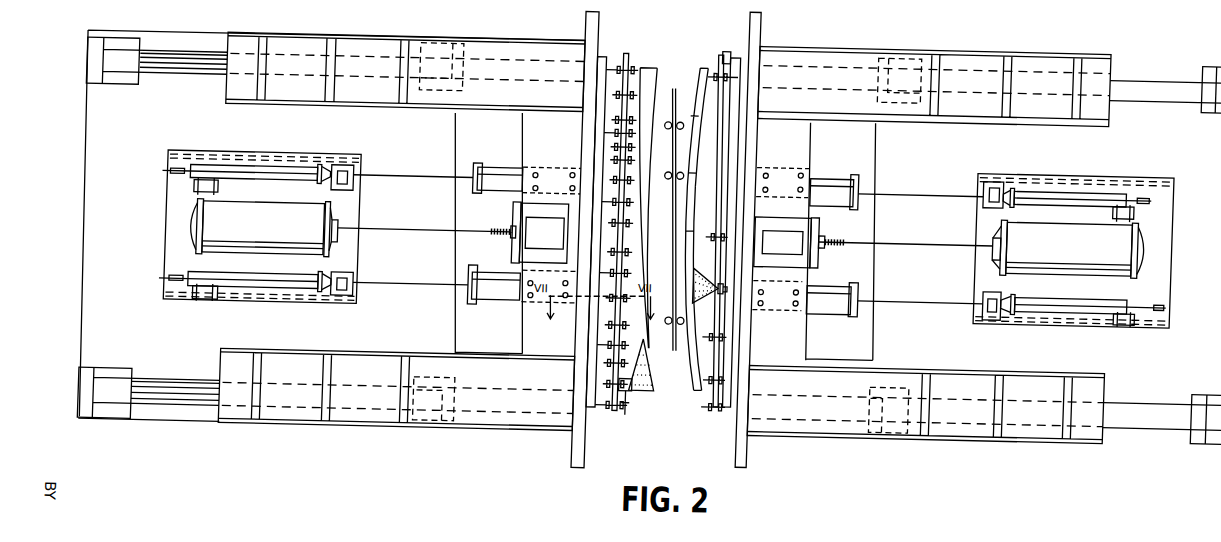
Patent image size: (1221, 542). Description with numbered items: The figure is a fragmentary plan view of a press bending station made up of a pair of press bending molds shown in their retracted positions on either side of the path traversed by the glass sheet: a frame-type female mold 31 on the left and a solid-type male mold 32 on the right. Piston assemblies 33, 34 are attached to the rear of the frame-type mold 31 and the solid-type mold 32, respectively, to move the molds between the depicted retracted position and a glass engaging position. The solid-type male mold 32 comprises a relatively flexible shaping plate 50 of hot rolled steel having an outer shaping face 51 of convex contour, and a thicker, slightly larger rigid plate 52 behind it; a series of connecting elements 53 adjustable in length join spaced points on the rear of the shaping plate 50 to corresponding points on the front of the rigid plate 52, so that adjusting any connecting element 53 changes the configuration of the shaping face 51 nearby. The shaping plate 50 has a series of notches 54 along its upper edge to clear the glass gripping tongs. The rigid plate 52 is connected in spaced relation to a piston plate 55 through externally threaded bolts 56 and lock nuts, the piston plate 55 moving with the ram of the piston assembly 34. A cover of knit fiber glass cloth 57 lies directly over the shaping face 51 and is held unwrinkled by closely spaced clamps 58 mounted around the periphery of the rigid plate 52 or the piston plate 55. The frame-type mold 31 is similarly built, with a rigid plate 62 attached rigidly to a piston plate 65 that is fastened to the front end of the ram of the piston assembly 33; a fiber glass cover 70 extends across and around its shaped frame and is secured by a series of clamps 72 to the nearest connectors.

The frame-type female mold 31 is at (628, 28).
The solid-type male mold 32 is at (725, 26).
The piston assembly 33 is at (128, 225).
The piston assembly 34 is at (1196, 231).
The shaping plate 50 is at (704, 52).
The shaping face 51 is at (702, 337).
The rigid plate 52 is at (726, 402).
The connecting elements 53 is at (714, 314).
The notches 54 is at (699, 111).
The piston plate 55 is at (764, 12).
The externally threaded bolts 56 is at (732, 41).
The knit fiber glass cloth cover 57 is at (706, 242).
The clamps 58 is at (730, 278).
The rigid plate 62 is at (626, 404).
The piston plate 65 is at (586, 6).
The fiber glass cover 70 is at (658, 377).
The clamps 72 is at (633, 415).